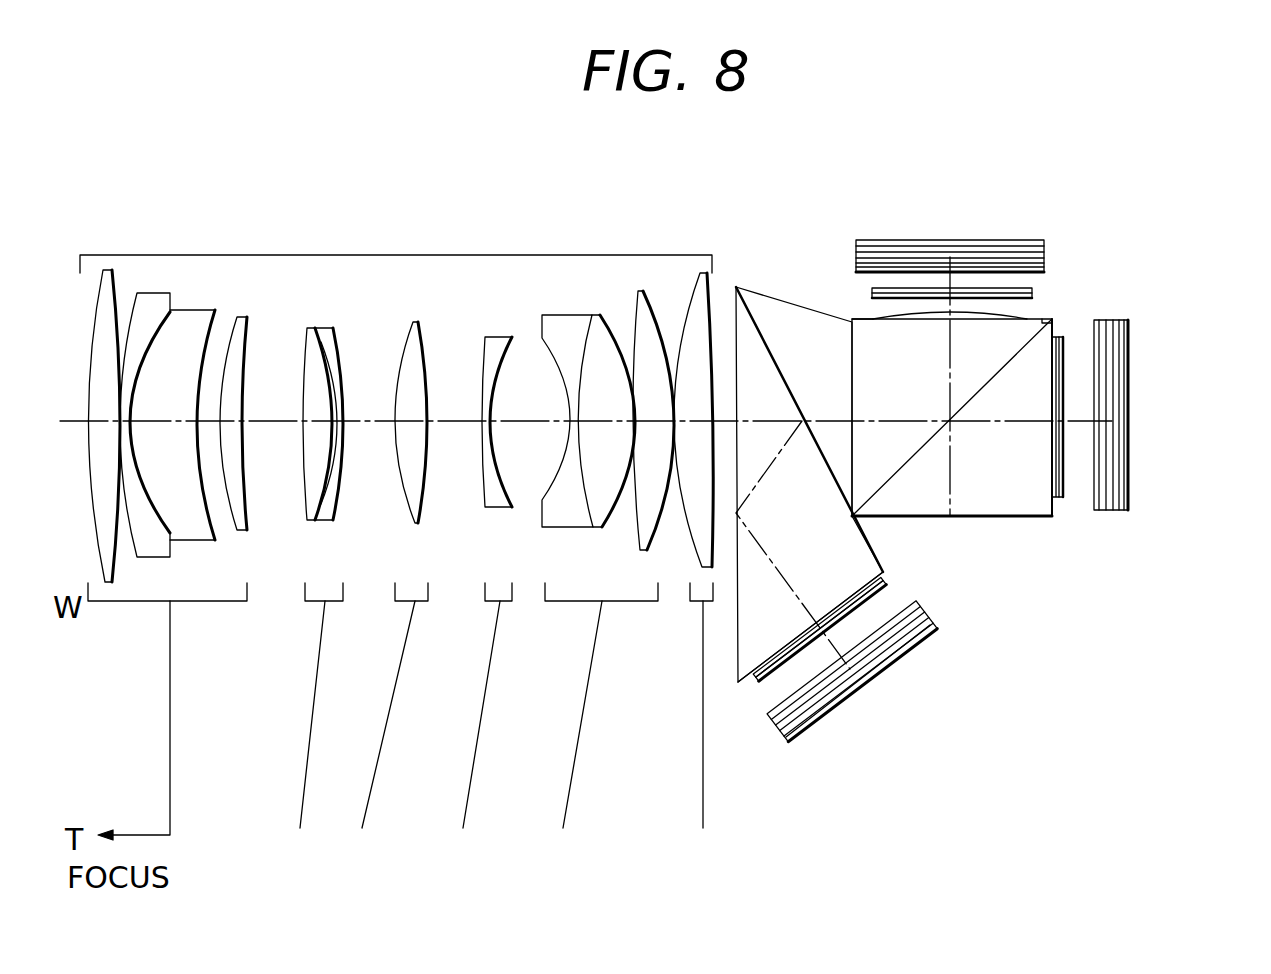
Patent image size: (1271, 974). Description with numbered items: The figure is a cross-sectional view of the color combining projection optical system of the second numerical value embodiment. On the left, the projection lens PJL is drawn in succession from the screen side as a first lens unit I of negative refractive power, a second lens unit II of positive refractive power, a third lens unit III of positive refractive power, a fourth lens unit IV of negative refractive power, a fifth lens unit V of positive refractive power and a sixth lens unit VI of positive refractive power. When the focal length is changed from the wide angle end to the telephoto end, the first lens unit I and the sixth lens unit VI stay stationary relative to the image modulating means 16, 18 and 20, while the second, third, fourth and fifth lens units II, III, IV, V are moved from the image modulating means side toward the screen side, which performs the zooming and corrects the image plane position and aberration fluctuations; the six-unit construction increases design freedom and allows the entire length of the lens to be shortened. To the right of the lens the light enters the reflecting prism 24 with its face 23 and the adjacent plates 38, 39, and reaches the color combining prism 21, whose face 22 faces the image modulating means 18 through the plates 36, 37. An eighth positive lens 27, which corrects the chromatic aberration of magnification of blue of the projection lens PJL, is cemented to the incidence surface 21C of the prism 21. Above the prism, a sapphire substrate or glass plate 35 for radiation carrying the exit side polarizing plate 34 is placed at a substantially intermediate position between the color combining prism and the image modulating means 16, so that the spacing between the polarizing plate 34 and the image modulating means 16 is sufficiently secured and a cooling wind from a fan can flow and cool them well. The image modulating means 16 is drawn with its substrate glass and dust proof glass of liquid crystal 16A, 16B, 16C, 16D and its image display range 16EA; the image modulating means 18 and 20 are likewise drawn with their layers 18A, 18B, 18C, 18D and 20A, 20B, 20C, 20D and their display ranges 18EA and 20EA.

The projection lens PJL is at (378, 253).
The first lens unit I is at (169, 555).
The second lens unit II is at (326, 578).
The third lens unit III is at (401, 575).
The fourth lens unit IV is at (498, 582).
The fifth lens unit V is at (608, 559).
The sixth lens unit VI is at (703, 550).
The prism 24 is at (752, 288).
The prism exit face 23 is at (740, 688).
The polarizing plate 39 is at (752, 690).
The quarter wave plate 38 is at (758, 692).
The prism 21 is at (1048, 318).
The incidence surface 21C is at (860, 320).
The prism face 22 is at (1056, 518).
The sapphire substrate or glass plate 35 is at (1028, 314).
The eighth positive lens 27 is at (1046, 318).
The exit side polarizing plate 34 is at (1033, 292).
The image modulating means 16 is at (904, 217).
The substrate glass and dust proof glass 16A is at (854, 264).
The substrate glass and dust proof glass 16B is at (854, 257).
The substrate glass and dust proof glass 16C is at (854, 250).
The substrate glass and dust proof glass 16D is at (854, 243).
The image display range 16EA is at (980, 250).
The polarizing plate 36 is at (1063, 500).
The quarter wave plate 37 is at (1061, 510).
The image modulating means 18 is at (1172, 358).
The panel layer 18A is at (1100, 318).
The panel layer 18B is at (1105, 318).
The panel layer 18C is at (1110, 318).
The panel layer 18D is at (1118, 318).
The effective display area of panel 18 18EA is at (1115, 430).
The image modulating means 20 is at (910, 655).
The panel layer 20A is at (923, 600).
The panel layer 20B is at (928, 607).
The panel layer 20C is at (933, 615).
The panel layer 20D is at (938, 623).
The effective display area of panel 20 20EA is at (880, 665).